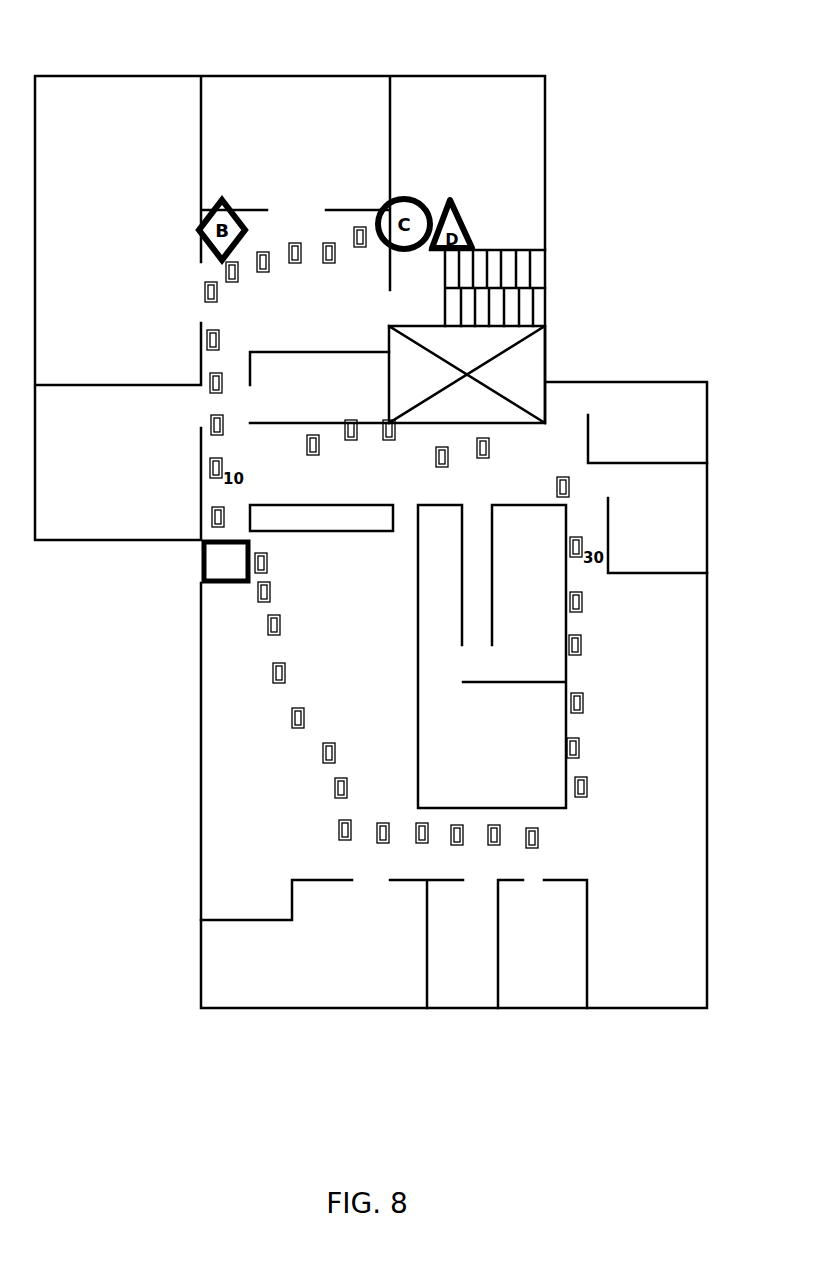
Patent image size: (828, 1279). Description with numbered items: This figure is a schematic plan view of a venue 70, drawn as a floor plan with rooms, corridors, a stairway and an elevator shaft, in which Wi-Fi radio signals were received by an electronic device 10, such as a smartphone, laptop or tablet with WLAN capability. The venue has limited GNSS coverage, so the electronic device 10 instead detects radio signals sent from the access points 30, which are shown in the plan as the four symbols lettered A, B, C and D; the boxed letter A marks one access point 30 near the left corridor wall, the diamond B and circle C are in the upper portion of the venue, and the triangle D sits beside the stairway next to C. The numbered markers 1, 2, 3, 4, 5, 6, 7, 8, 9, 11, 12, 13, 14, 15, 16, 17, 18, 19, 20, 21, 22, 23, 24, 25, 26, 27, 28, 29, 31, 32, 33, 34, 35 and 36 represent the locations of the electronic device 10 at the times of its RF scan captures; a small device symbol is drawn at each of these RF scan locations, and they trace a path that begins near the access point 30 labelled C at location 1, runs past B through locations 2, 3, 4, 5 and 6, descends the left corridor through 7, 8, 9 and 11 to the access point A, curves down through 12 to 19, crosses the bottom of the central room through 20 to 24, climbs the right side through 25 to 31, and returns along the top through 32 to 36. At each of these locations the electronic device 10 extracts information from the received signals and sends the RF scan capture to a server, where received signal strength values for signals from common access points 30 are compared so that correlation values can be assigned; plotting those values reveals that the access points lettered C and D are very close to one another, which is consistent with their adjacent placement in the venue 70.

The electronic device 10 is at (358, 227).
The access point 30 is at (199, 595).
The floor plan of building 70 is at (165, 1044).
The RF scan capture location 1 is at (365, 242).
The RF scan capture location 2 is at (334, 258).
The RF scan capture location 3 is at (300, 258).
The RF scan capture location 4 is at (268, 267).
The RF scan capture location 5 is at (237, 277).
The RF scan capture location 6 is at (216, 297).
The RF scan capture location 7 is at (218, 345).
The RF scan capture location 8 is at (221, 388).
The RF scan capture location 9 is at (222, 430).
The RF scan capture location 11 is at (229, 522).
The RF scan capture location 12 is at (272, 568).
The RF scan capture location 13 is at (275, 597).
The RF scan capture location 14 is at (285, 630).
The RF scan capture location 15 is at (290, 678).
The RF scan capture location 16 is at (309, 723).
The RF scan capture location 17 is at (340, 758).
The RF scan capture location 18 is at (352, 793).
The RF scan capture location 19 is at (356, 835).
The RF scan capture location 20 is at (394, 838).
The RF scan capture location 21 is at (433, 838).
The RF scan capture location 22 is at (468, 840).
The RF scan capture location 23 is at (505, 840).
The RF scan capture location 24 is at (543, 843).
The RF scan capture location 25 is at (592, 792).
The RF scan capture location 26 is at (584, 753).
The RF scan capture location 27 is at (588, 708).
The RF scan capture location 28 is at (586, 650).
The RF scan capture location 29 is at (587, 607).
The RF scan capture location 31 is at (574, 492).
The RF scan capture location 32 is at (494, 453).
The RF scan capture location 33 is at (453, 462).
The RF scan capture location 34 is at (400, 435).
The RF scan capture location 35 is at (362, 435).
The RF scan capture location 36 is at (324, 450).